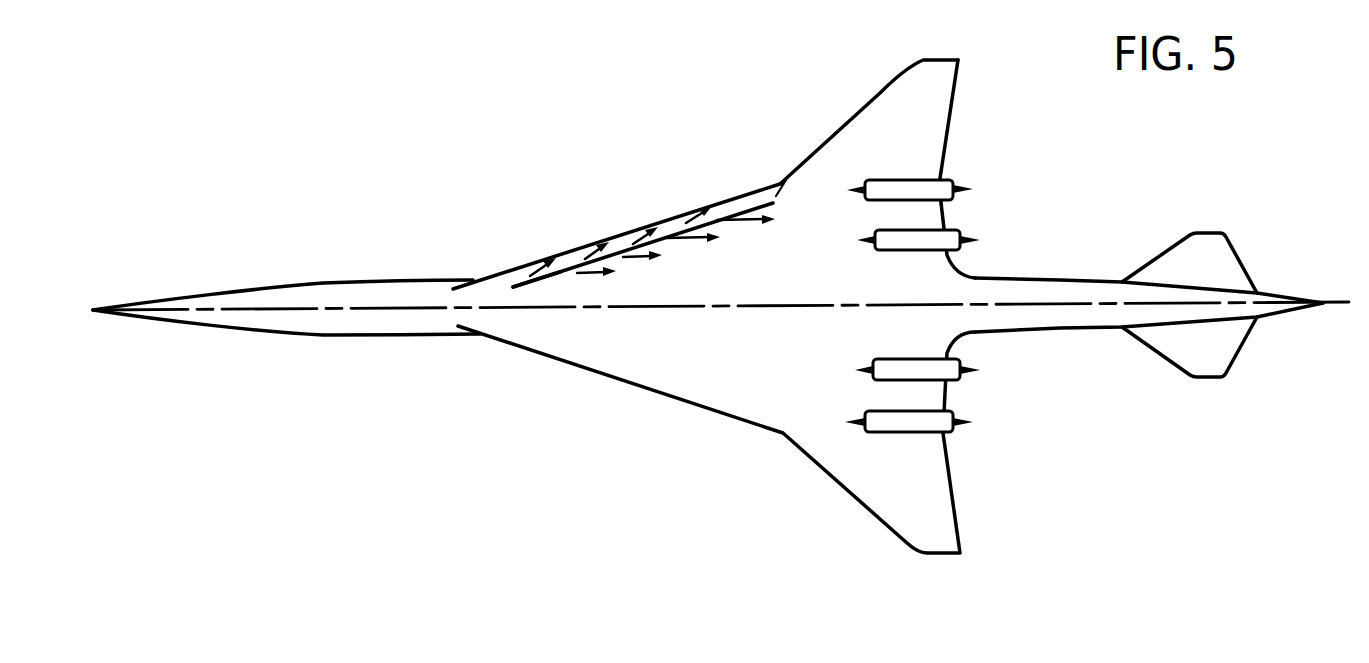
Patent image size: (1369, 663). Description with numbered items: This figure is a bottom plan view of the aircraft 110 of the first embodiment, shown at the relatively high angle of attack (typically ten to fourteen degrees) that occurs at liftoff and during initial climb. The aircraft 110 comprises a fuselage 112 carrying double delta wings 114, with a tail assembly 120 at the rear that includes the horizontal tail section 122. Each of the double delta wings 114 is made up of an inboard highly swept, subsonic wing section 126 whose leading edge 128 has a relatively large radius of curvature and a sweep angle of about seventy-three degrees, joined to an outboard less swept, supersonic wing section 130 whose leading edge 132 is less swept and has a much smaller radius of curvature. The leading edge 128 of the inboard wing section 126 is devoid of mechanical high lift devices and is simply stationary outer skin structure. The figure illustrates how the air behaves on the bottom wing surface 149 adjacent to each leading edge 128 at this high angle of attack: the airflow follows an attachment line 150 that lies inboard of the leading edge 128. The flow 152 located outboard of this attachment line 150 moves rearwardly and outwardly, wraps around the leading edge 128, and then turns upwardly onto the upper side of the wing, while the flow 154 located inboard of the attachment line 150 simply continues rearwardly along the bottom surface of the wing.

The aircraft 110 is at (374, 232).
The fuselage 112 is at (357, 292).
The double delta wings 114 is at (880, 140).
The tail assembly 120 is at (1187, 204).
The horizontal tail section 122 is at (1173, 257).
The inboard highly swept wing section 126 is at (610, 358).
The leading edge 128 is at (673, 215).
The outboard less swept wing section 130 is at (822, 167).
The outboard leading edge 132 is at (840, 127).
The bottom wing surface 149 is at (779, 186).
The attachment line 150 is at (568, 282).
The outboard flow 152 is at (627, 242).
The inboard flow 154 is at (697, 245).